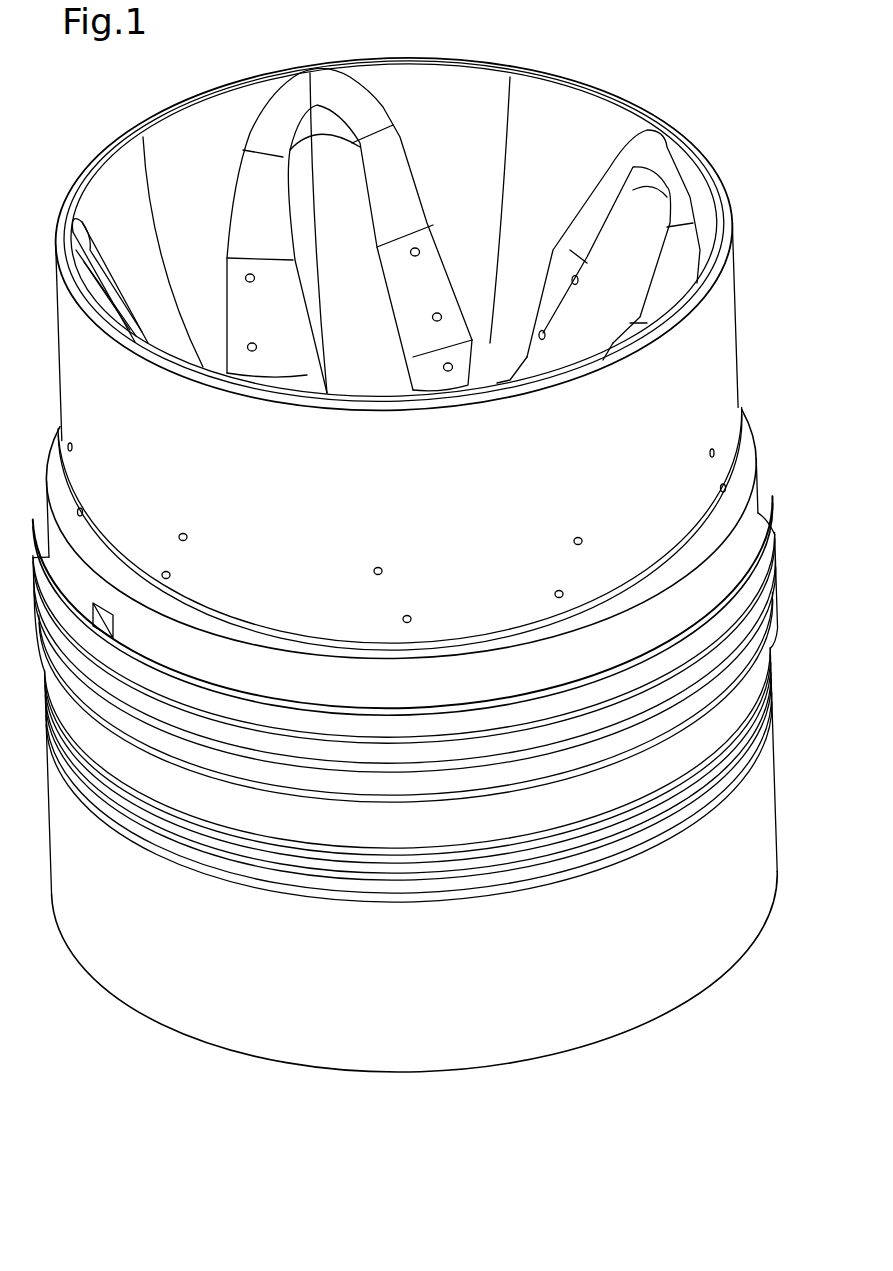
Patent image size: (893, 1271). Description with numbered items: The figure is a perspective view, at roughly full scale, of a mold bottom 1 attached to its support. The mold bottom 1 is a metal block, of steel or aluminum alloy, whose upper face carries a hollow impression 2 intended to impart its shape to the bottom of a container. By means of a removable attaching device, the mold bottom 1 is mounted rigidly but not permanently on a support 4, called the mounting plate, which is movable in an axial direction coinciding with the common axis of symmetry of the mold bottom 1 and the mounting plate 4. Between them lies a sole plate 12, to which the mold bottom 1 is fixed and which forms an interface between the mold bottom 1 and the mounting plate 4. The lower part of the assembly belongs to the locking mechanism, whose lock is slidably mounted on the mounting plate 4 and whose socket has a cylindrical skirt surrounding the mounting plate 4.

The mold bottom 1 is at (738, 304).
The hollow impression 2 is at (583, 128).
The sole plate 12 is at (780, 566).
The support 4 is at (416, 823).